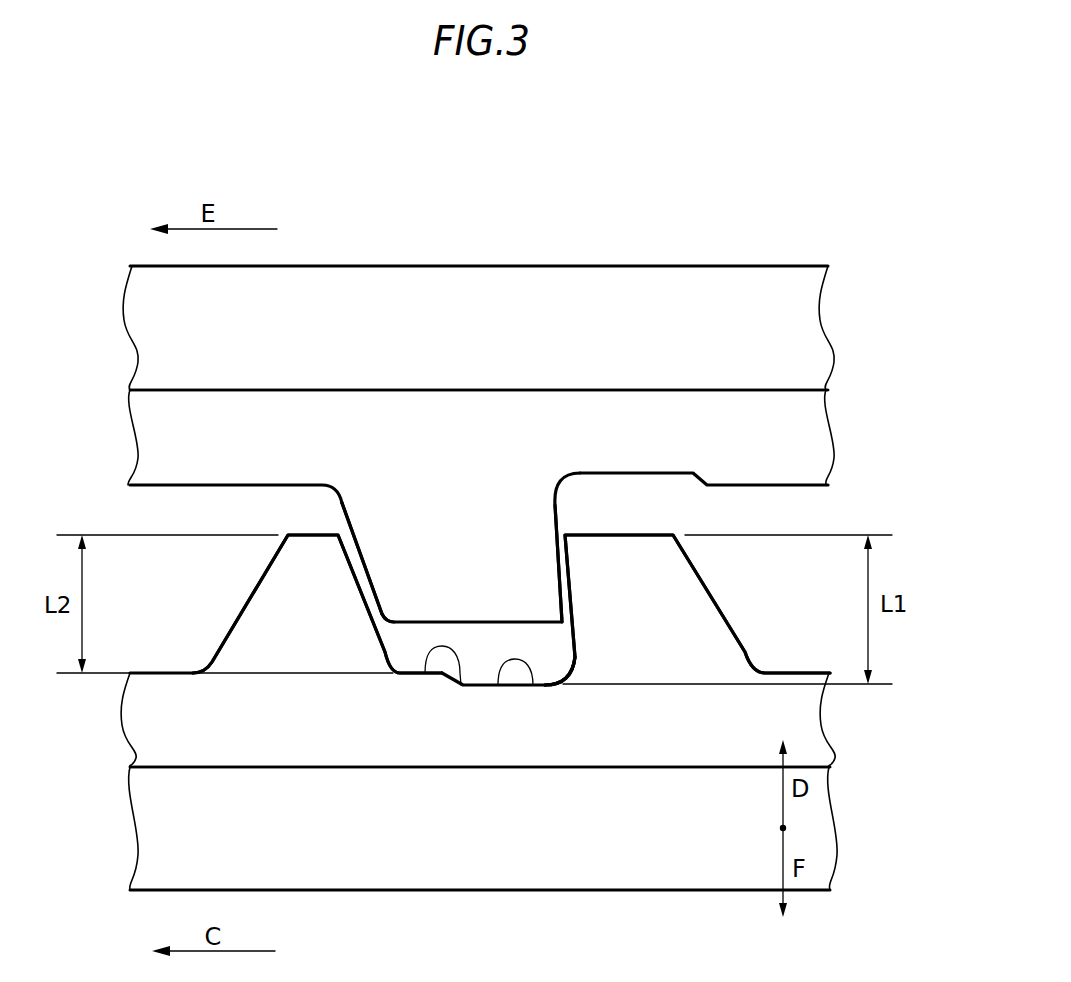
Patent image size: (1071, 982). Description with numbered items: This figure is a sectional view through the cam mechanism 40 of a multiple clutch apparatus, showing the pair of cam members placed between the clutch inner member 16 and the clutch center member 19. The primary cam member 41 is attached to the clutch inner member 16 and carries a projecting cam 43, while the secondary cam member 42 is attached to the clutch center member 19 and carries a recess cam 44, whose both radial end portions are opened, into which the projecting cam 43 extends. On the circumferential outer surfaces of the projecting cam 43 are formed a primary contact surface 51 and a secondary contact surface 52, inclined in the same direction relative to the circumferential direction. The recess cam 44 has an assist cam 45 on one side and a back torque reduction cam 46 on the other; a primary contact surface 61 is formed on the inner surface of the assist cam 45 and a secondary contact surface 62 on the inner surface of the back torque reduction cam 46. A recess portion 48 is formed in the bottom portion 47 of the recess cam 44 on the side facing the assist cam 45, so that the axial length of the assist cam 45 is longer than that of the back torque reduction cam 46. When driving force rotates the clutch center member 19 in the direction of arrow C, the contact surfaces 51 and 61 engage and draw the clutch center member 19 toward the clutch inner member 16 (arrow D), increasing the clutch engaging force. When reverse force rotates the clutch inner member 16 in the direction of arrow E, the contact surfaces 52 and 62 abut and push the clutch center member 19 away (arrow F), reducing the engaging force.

The clutch inner member 16 is at (768, 287).
The clutch center member 19 is at (155, 837).
The cam mechanism 40 is at (434, 378).
The primary cam member 41 is at (813, 440).
The secondary cam member 42 is at (813, 725).
The projecting cam 43 is at (453, 557).
The recess cam 44 is at (310, 555).
The assist cam 45 is at (633, 612).
The back torque reduction cam 46 is at (313, 617).
The bottom portion 47 is at (461, 685).
The recess portion 48 is at (533, 685).
The primary contact surface 51 is at (560, 567).
The secondary contact surface 52 is at (354, 568).
The primary contact surface 61 is at (563, 600).
The secondary contact surface 62 is at (362, 593).